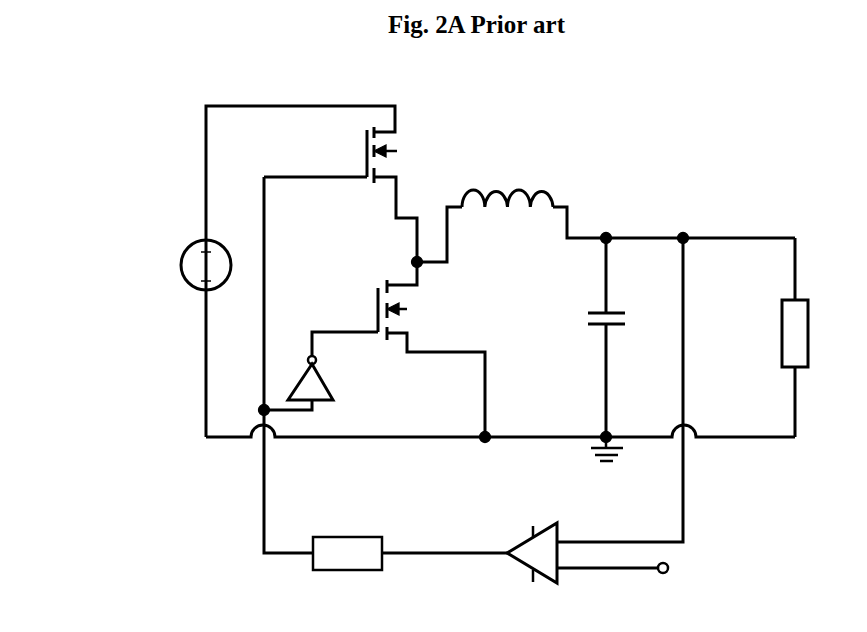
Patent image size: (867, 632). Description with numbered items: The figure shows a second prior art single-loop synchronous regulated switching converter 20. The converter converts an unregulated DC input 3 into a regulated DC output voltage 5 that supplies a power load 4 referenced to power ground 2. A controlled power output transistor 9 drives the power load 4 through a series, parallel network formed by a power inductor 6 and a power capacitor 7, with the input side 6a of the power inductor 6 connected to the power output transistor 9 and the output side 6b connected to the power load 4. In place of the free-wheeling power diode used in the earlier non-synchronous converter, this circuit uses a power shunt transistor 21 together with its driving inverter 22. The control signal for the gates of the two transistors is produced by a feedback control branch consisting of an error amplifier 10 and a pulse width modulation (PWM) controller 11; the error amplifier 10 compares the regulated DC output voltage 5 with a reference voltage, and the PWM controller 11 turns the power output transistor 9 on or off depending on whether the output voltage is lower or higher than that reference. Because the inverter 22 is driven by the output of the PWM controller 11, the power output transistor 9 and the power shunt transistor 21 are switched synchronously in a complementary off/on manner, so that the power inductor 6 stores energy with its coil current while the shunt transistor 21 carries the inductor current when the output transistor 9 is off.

The single-loop synchronous regulated switching converter 20 is at (83, 106).
The power ground 2 is at (547, 443).
The unregulated DC input 3 is at (182, 247).
The power load 4 is at (813, 325).
The regulated DC output voltage 5 is at (692, 230).
The power inductor 6 is at (507, 183).
The input side of the power inductor 6a is at (407, 257).
The output side of the power inductor 6b is at (615, 232).
The power capacitor 7 is at (585, 325).
The power output transistor 9 is at (400, 150).
The error amplifier 10 is at (518, 570).
The pulse width modulation (PWM) controller 11 is at (333, 573).
The power shunt transistor 21 is at (412, 309).
The inverter 22 is at (332, 387).